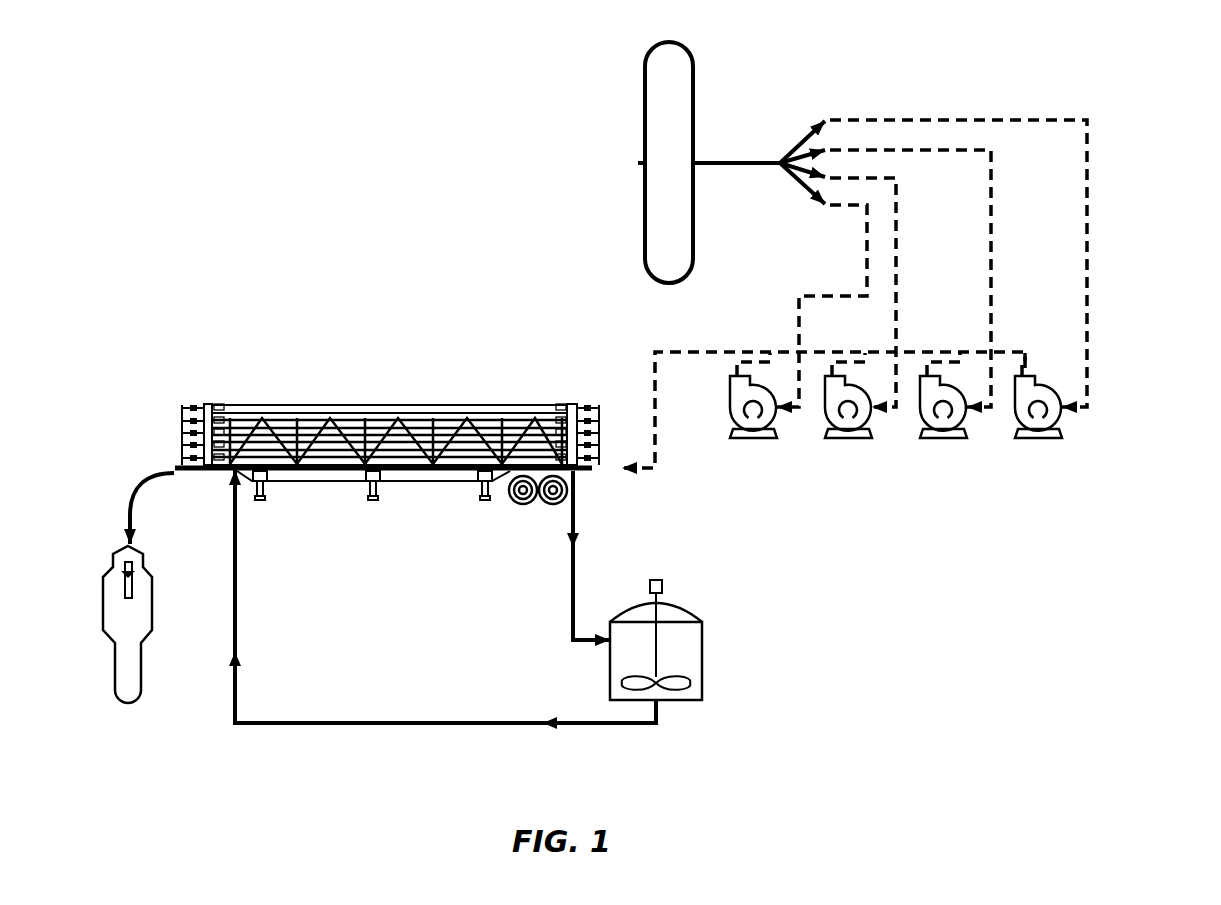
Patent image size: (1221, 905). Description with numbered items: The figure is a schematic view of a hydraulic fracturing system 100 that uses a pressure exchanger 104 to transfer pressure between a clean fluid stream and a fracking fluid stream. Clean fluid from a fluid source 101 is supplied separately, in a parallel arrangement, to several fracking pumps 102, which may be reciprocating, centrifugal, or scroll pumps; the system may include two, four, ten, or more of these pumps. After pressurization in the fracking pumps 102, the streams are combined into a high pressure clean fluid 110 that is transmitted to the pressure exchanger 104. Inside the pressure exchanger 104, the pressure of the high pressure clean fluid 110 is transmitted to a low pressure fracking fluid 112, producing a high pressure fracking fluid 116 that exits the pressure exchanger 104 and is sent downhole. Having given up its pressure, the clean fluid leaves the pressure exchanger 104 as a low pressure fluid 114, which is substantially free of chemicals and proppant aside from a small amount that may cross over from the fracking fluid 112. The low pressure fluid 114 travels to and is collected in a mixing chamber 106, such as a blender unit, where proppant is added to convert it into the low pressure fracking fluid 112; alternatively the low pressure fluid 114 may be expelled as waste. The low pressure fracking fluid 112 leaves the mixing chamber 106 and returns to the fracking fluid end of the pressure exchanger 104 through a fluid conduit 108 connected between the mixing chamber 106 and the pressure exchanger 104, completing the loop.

The hydraulic fracturing system 100 is at (1064, 68).
The fluid source 101 is at (658, 145).
The fracking pumps 102 is at (1023, 422).
The pressure exchanger 104 is at (330, 405).
The mixing chamber 106 is at (673, 658).
The fluid conduit 108 is at (352, 725).
The high pressure clean fluid 110 is at (653, 372).
The low pressure fracking fluid 112 is at (233, 718).
The low pressure fluid 114 is at (572, 617).
The high pressure fracking fluid 116 is at (130, 495).